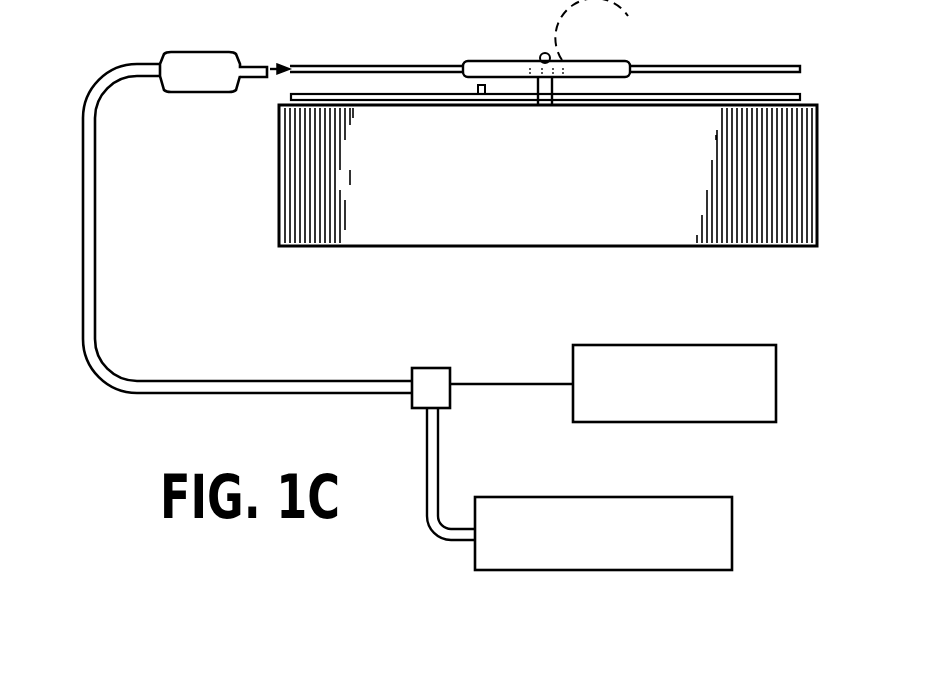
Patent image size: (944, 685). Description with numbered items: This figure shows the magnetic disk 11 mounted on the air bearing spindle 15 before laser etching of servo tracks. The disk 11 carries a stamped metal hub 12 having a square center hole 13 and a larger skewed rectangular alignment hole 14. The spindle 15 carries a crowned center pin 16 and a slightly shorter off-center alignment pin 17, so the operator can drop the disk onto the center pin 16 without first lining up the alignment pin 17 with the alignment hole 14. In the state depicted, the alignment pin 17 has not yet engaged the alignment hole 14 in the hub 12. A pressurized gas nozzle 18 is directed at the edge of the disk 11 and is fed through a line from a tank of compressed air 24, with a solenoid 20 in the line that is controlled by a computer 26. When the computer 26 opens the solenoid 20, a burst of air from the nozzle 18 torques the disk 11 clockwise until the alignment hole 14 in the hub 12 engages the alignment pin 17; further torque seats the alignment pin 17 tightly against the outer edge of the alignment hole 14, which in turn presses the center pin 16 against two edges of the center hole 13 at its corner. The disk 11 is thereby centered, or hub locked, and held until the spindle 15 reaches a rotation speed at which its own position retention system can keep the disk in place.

The disk 11 is at (713, 65).
The hub 12 is at (510, 67).
The center hole 13 is at (542, 54).
The alignment hole 14 is at (606, 30).
The spindle 15 is at (790, 95).
The center pin 16 is at (558, 84).
The alignment pin 17 is at (477, 90).
The pressurized gas nozzle 18 is at (207, 63).
The solenoid 20 is at (432, 370).
The tank of compressed air 24 is at (725, 505).
The computer 26 is at (770, 356).